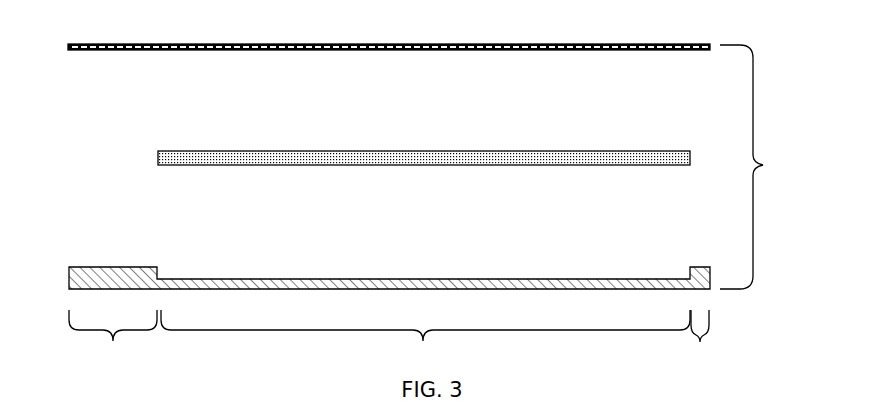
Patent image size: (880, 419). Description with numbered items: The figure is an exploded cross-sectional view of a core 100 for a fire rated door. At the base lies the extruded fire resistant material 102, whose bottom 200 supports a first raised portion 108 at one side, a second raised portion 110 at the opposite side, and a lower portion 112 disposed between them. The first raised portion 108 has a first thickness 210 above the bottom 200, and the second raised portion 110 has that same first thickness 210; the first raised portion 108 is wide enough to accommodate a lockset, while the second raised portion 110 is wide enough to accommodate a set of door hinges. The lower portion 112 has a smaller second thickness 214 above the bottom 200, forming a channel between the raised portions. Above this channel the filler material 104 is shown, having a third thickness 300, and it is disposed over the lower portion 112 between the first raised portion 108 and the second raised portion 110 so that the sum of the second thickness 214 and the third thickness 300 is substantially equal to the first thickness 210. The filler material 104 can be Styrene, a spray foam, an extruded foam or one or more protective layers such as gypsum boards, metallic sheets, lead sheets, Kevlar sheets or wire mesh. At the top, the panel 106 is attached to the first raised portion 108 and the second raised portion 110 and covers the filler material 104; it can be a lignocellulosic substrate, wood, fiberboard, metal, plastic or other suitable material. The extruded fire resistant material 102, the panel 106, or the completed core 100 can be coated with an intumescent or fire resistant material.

The core 100 is at (766, 167).
The extruded fire resistant material 102 is at (96, 267).
The filler material 104 is at (179, 151).
The panel 106 is at (94, 44).
The first raised portion 108 is at (113, 339).
The second raised portion 110 is at (700, 339).
The lower portion 112 is at (425, 339).
The bottom 200 is at (496, 292).
The first thickness 210 is at (118, 311).
The second thickness 214 is at (345, 315).
The third thickness 300 is at (345, 188).